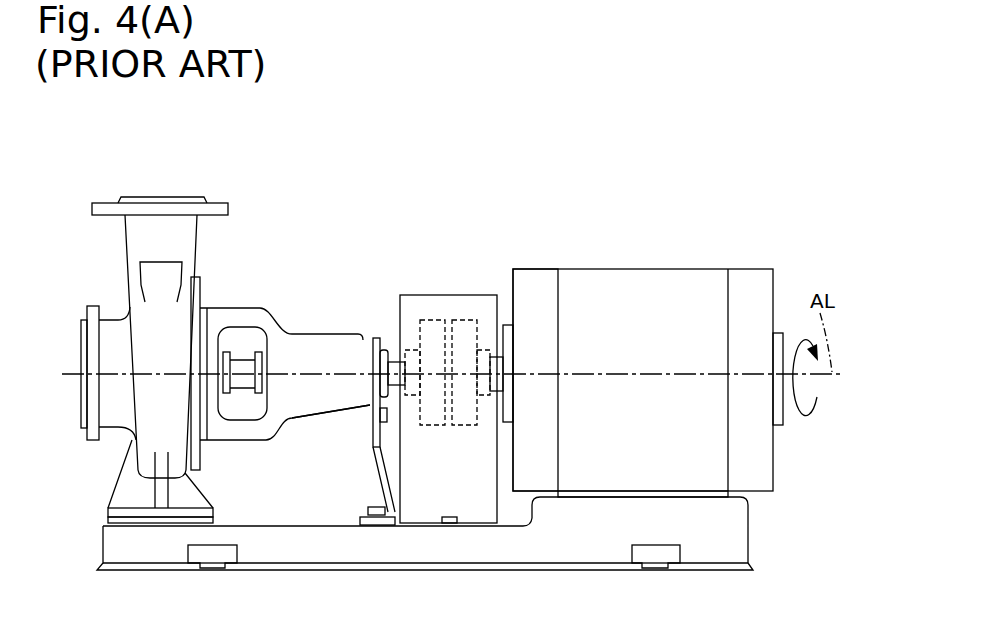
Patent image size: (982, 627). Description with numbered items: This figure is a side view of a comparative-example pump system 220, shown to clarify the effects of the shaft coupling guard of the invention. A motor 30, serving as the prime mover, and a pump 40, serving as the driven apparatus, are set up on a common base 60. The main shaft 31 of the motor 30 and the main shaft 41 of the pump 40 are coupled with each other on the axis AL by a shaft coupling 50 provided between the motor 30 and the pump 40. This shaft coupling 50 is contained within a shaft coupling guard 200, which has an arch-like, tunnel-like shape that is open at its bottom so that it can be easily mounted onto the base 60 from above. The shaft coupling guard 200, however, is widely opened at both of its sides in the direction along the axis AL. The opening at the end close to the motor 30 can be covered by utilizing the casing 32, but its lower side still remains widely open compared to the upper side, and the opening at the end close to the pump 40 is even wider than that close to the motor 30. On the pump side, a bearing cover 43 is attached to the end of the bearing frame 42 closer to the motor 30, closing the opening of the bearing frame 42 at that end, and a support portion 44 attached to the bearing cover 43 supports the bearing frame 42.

The pump system 220 is at (767, 194).
The pump 40 is at (285, 300).
The main shaft 41 is at (395, 360).
The bearing frame 42 is at (322, 403).
The bearing cover 43 is at (362, 337).
The support portion 44 is at (377, 470).
The shaft coupling 50 is at (432, 316).
The shaft coupling guard 200 is at (453, 270).
The main shaft 31 is at (498, 305).
The casing 32 is at (540, 268).
The motor 30 is at (703, 256).
The base 60 is at (728, 533).